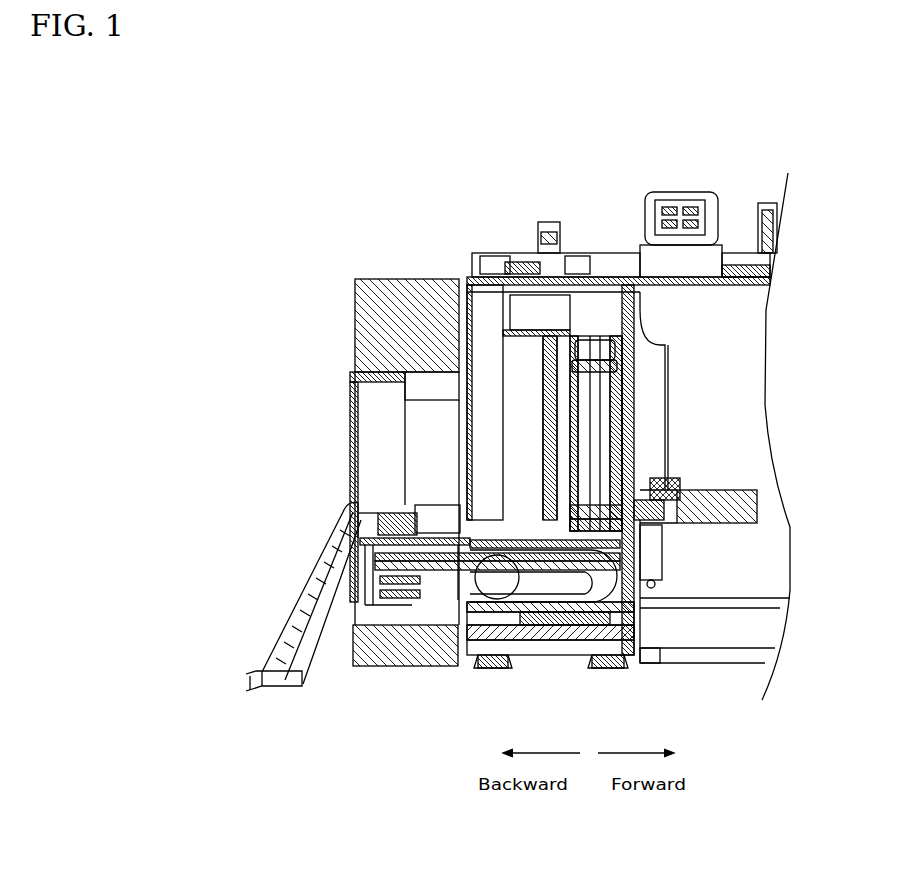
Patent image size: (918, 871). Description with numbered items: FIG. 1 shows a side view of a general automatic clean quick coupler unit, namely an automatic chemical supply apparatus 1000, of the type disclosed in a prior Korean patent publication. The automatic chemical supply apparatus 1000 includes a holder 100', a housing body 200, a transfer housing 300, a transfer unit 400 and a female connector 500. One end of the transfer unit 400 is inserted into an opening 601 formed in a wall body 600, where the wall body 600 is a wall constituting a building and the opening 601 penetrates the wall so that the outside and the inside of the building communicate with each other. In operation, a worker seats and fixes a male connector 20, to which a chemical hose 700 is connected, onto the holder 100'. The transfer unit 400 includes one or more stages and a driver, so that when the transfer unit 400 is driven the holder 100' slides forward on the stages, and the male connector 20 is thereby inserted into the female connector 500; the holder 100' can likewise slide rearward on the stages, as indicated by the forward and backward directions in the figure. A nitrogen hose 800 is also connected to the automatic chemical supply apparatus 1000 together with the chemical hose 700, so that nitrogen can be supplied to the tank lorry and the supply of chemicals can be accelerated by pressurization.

The automatic chemical supply apparatus 1000 is at (361, 157).
The transfer housing 300 is at (533, 252).
The housing body 200 is at (746, 255).
The opening 601 is at (424, 382).
The male connector 20 is at (425, 492).
The holder 100' is at (434, 557).
The chemical hose 700 is at (297, 603).
The nitrogen hose 800 is at (302, 688).
The wall body 600 is at (423, 650).
The transfer unit 400 is at (442, 583).
The female connector 500 is at (718, 512).